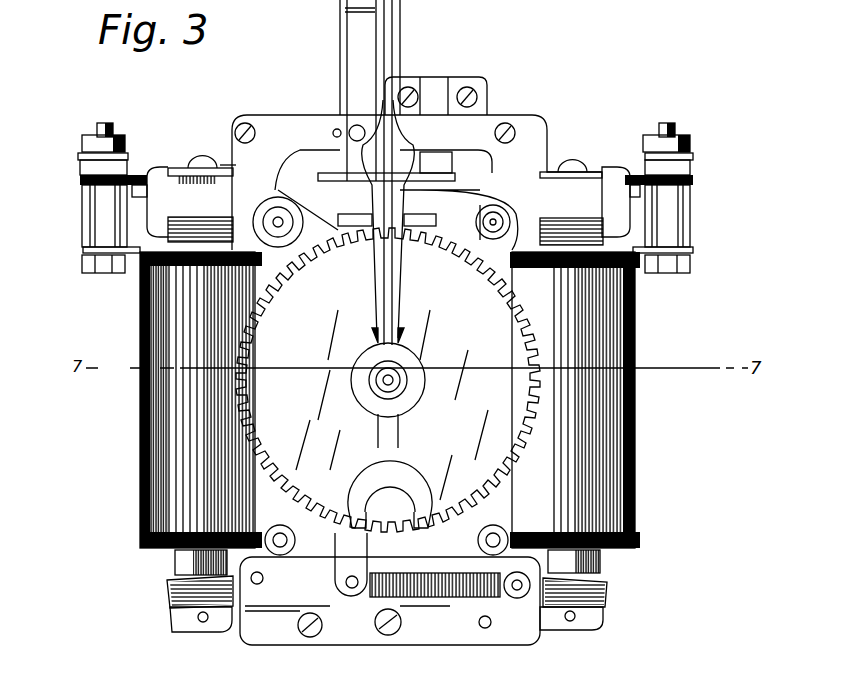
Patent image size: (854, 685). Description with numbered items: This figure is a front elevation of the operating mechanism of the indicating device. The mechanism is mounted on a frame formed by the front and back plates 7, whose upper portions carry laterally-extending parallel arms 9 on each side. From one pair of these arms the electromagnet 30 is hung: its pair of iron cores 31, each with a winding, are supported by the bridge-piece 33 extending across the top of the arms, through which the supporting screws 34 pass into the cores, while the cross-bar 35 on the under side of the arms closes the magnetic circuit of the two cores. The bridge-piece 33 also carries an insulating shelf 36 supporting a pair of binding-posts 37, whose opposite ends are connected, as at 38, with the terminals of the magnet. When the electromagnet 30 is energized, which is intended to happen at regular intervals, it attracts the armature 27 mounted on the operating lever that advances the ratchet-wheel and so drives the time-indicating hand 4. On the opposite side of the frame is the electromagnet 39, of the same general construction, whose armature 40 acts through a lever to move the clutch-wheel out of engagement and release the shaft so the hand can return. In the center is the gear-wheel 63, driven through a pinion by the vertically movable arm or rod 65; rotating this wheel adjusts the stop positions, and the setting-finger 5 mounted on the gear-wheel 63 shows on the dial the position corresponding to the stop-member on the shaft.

The time-indicating hand 4 is at (381, 292).
The setting-finger 5 is at (400, 293).
The front and back plates 7 is at (499, 125).
The laterally-extending parallel arms 9 is at (157, 170).
The armature 27 is at (180, 600).
The electromagnet 30 is at (180, 400).
The iron cores 31 is at (175, 565).
The bridge-piece 33 is at (221, 166).
The supporting screws 34 is at (194, 162).
The cross-bar 35 is at (196, 228).
The insulating shelf 36 is at (82, 178).
The binding-posts 37 is at (110, 129).
The connection of binding-posts 38 is at (128, 262).
The electromagnet 39 is at (633, 497).
The armature 40 is at (601, 598).
The gear-wheel 63 is at (505, 348).
The arm or rod 65 is at (397, 22).